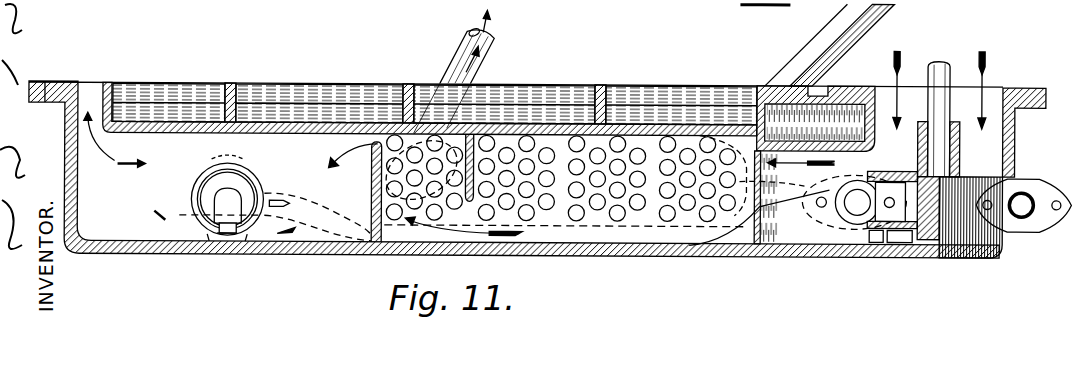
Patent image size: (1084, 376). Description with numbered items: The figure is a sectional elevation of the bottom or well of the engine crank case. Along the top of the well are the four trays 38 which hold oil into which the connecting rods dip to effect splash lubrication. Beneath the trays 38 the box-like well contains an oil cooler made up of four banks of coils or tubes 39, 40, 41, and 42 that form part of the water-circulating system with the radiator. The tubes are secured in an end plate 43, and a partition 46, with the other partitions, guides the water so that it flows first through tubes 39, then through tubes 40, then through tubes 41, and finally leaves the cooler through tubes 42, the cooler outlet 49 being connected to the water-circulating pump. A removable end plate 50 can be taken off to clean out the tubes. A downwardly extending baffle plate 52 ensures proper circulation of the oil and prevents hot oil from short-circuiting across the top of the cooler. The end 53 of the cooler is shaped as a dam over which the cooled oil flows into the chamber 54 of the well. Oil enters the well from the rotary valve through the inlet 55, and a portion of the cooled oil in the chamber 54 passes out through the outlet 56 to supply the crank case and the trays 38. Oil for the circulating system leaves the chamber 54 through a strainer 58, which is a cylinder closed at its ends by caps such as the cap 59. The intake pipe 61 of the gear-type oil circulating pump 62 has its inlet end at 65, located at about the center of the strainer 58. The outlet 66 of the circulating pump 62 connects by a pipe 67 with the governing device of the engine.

The trays 38 is at (170, 94).
The tubes 39 is at (693, 215).
The tubes 40 is at (603, 216).
The tubes 41 is at (544, 213).
The tubes 42 is at (447, 206).
The end plate 43 is at (548, 0).
The partition 46 is at (572, 0).
The outlet 49 is at (462, 47).
The removable end plate 50 is at (432, 2).
The baffle plate 52 is at (462, 138).
The end of the cooler 53 is at (372, 188).
The chamber 54 is at (336, 0).
The inlet 55 is at (992, 92).
The outlet 56 is at (87, 89).
The strainer 58 is at (248, 187).
The cap 59 is at (270, 0).
The intake pipe 61 is at (314, 195).
The oil circulating pump 62 is at (912, 208).
The inlet end of intake pipe 65 is at (207, 233).
The outlet 66 is at (1022, 199).
The pipe 67 is at (1031, 213).